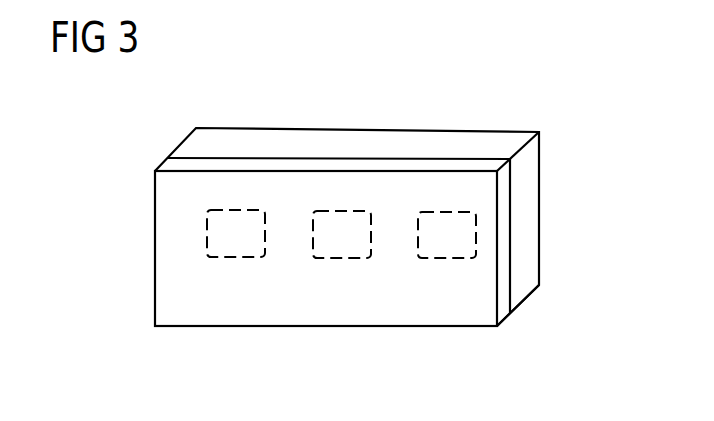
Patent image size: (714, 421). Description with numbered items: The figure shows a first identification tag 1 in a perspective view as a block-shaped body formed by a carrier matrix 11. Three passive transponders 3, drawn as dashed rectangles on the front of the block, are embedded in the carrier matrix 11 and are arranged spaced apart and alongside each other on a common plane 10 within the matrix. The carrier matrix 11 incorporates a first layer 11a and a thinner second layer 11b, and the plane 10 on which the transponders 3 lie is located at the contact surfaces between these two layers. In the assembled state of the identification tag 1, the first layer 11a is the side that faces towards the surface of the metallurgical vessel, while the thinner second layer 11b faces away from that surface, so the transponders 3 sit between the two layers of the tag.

The first identification tag 1 is at (342, 113).
The passive transponders 3 is at (448, 247).
The plane 10 is at (580, 250).
The carrier matrix 11 is at (580, 142).
The first layer 11a is at (580, 198).
The second layer 11b is at (580, 337).